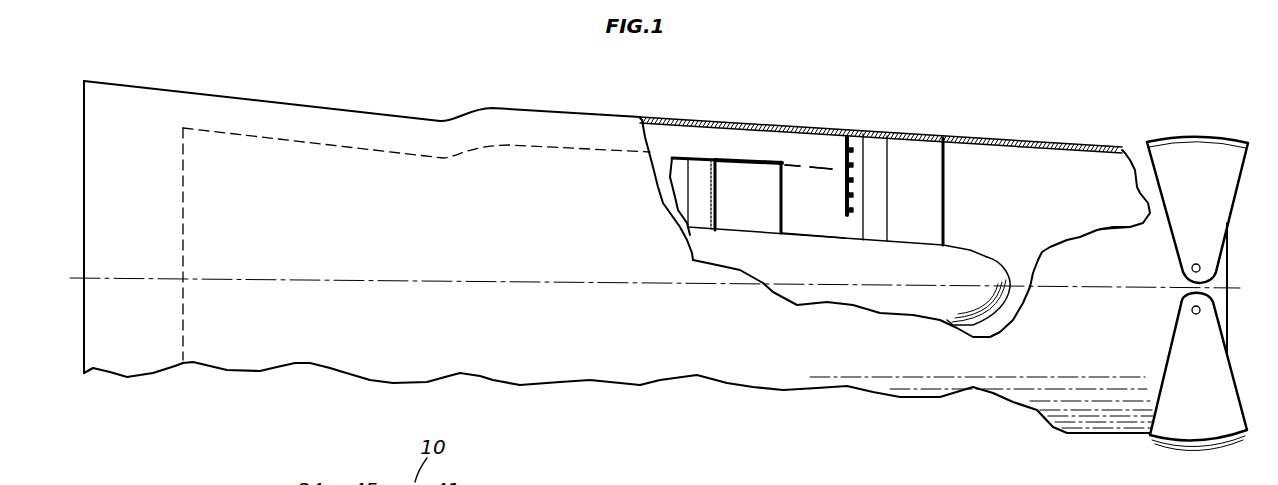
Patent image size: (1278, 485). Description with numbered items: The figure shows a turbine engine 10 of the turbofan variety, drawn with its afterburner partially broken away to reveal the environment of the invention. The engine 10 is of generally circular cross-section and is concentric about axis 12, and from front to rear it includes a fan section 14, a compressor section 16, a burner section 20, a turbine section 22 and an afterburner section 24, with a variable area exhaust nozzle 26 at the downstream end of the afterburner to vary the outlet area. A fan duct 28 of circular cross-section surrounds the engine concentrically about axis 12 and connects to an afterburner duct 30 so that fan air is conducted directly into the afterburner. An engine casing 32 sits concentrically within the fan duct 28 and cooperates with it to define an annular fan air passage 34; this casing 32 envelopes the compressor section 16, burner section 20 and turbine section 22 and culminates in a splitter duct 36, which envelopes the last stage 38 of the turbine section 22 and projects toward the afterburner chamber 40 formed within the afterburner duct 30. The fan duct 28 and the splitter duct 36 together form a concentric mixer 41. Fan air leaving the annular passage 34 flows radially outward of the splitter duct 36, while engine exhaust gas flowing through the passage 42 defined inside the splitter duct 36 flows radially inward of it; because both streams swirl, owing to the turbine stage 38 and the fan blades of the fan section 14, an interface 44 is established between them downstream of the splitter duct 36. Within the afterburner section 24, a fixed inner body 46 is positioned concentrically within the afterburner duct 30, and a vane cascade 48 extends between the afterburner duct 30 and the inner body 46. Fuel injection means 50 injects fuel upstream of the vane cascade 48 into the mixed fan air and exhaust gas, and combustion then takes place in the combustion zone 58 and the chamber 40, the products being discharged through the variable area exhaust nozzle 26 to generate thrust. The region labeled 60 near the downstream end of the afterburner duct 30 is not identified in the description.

The turbine engine 10 is at (733, 104).
The axis 12 is at (440, 279).
The fan section 14 is at (120, 223).
The compressor section 16 is at (275, 225).
The burner section 20 is at (543, 225).
The turbine section 22 is at (630, 225).
The afterburner section 24 is at (1046, 160).
The variable area exhaust nozzle 26 is at (1210, 133).
The fan duct 28 is at (255, 98).
The afterburner duct 30 is at (1036, 138).
The engine casing 32 is at (313, 136).
The annular fan air passage 34 is at (648, 118).
The splitter duct 36 is at (757, 160).
The last stage of turbine section 38 is at (700, 170).
The afterburner chamber 40 is at (1000, 213).
The concentric mixer 41 is at (800, 206).
The passage 42 is at (736, 206).
The interface 44 is at (812, 166).
The fixed inner body 46 is at (988, 258).
The vane cascade 48 is at (913, 154).
The fuel injection means 50 is at (843, 147).
The combustion zone 58 is at (900, 216).
The end region 60 is at (1115, 218).